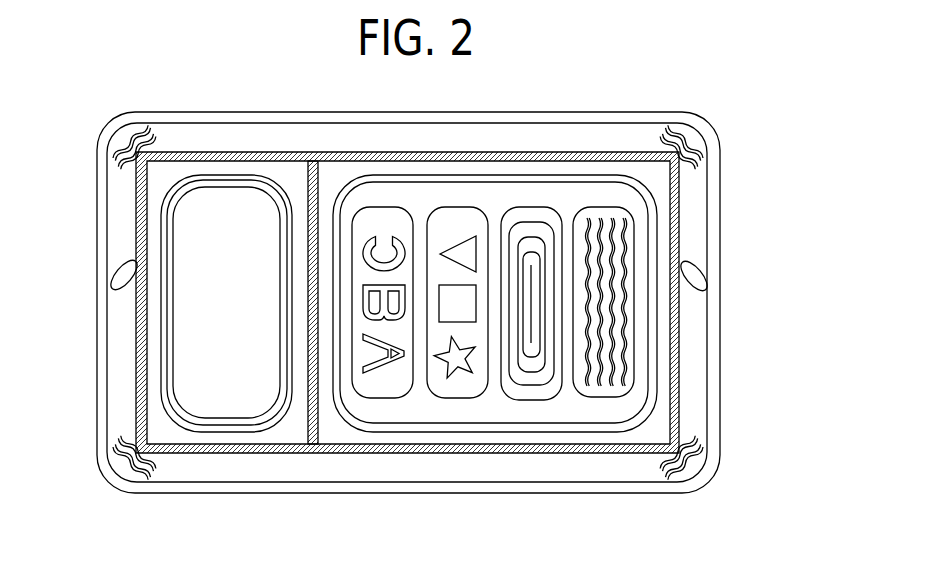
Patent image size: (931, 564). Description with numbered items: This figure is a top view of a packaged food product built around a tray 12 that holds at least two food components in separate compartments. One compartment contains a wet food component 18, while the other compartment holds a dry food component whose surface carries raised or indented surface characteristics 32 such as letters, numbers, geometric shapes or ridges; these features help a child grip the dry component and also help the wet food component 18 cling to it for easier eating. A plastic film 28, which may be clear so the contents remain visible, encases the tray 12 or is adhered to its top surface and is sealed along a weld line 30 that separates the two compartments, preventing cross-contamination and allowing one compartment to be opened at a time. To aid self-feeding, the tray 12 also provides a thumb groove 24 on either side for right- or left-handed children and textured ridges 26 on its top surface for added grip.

The tray 12 is at (692, 343).
The first food component 18 is at (203, 368).
The thumb groove 24 is at (120, 272).
The textured ridges 26 is at (128, 132).
The plastic film 28 is at (697, 123).
The weld line 30 is at (672, 228).
The surface characteristics 32 is at (448, 390).